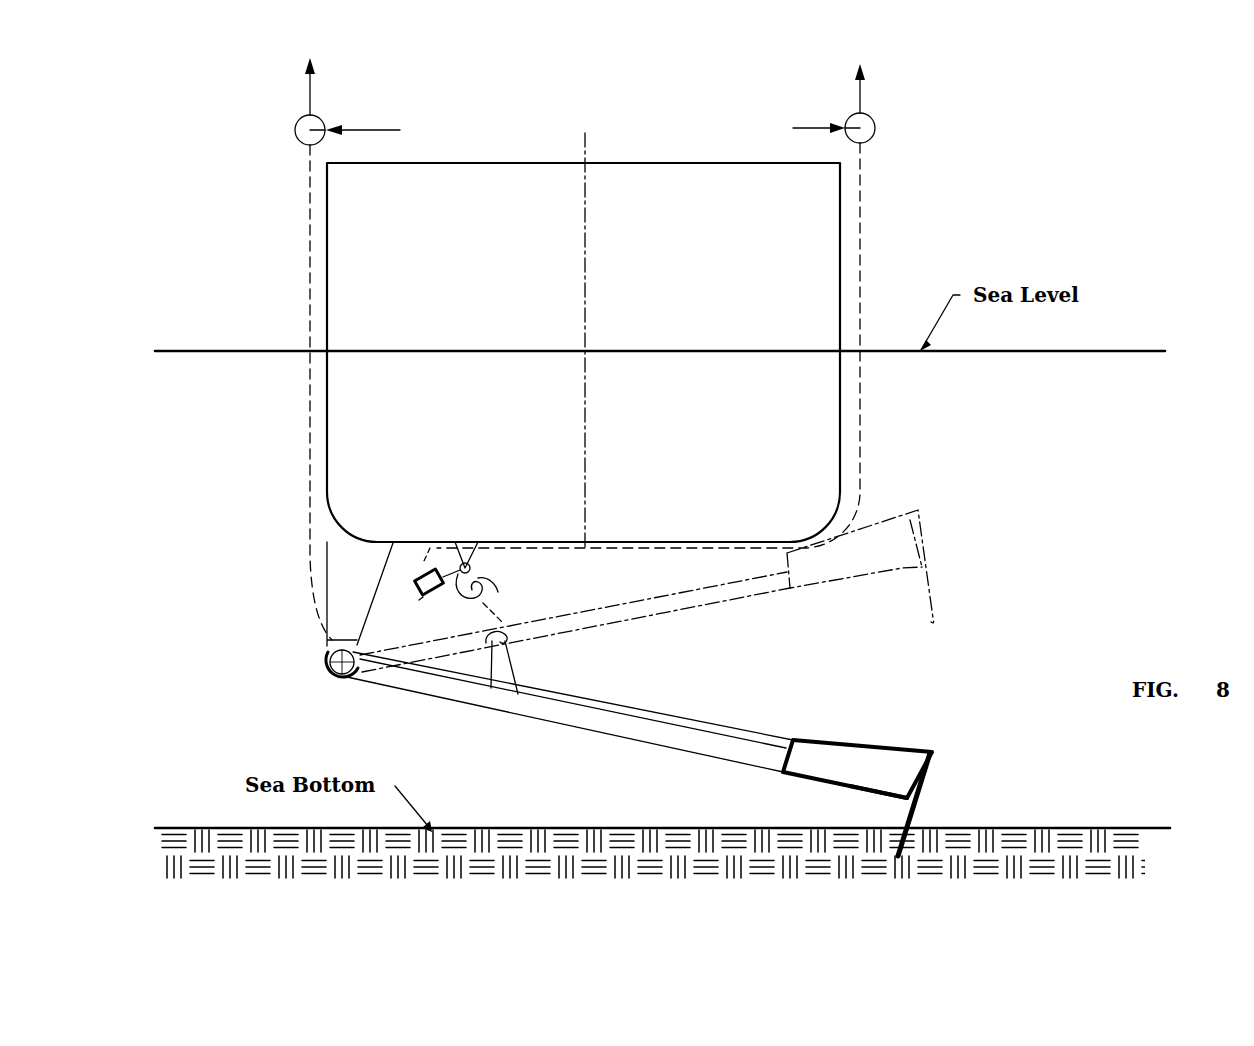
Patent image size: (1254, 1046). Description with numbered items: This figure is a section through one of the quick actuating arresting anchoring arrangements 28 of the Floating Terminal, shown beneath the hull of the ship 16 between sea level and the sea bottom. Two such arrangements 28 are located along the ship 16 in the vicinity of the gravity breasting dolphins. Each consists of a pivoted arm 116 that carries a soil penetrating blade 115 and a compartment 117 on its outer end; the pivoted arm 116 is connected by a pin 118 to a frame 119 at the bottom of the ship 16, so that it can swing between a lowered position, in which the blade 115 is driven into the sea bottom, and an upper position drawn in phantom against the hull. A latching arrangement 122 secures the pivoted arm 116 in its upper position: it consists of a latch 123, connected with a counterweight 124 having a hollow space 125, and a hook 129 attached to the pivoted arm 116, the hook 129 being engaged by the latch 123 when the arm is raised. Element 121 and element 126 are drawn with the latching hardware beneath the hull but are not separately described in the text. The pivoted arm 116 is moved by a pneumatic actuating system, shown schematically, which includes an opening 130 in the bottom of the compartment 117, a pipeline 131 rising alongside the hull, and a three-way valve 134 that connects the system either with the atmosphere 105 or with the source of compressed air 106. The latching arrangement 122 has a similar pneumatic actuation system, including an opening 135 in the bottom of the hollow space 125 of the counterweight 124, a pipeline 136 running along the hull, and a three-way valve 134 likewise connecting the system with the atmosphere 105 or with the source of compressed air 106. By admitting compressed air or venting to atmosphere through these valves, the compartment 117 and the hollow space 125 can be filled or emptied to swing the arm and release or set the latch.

The ship 16 is at (483, 162).
The quick actuating arresting anchoring arrangement 28 is at (634, 699).
The atmosphere 105 is at (311, 101).
The source of compressed air 106 is at (363, 128).
The soil penetrating blade 115 is at (918, 822).
The pivoted arm 116 is at (598, 721).
The compartment 117 is at (878, 778).
The pin 118 is at (330, 676).
The frame 119 is at (330, 634).
The hanger bracket 121 is at (463, 548).
The latching arrangement 122 is at (528, 591).
The latch 123 is at (477, 600).
The counterweight 124 is at (412, 584).
The hollow space 125 is at (408, 572).
The release hook 126 is at (478, 548).
The hook 129 is at (503, 671).
The opening 130 is at (893, 809).
The pipeline 131 is at (308, 483).
The three-way valve 134 is at (873, 140).
The opening 135 is at (424, 600).
The pipeline 136 is at (862, 418).